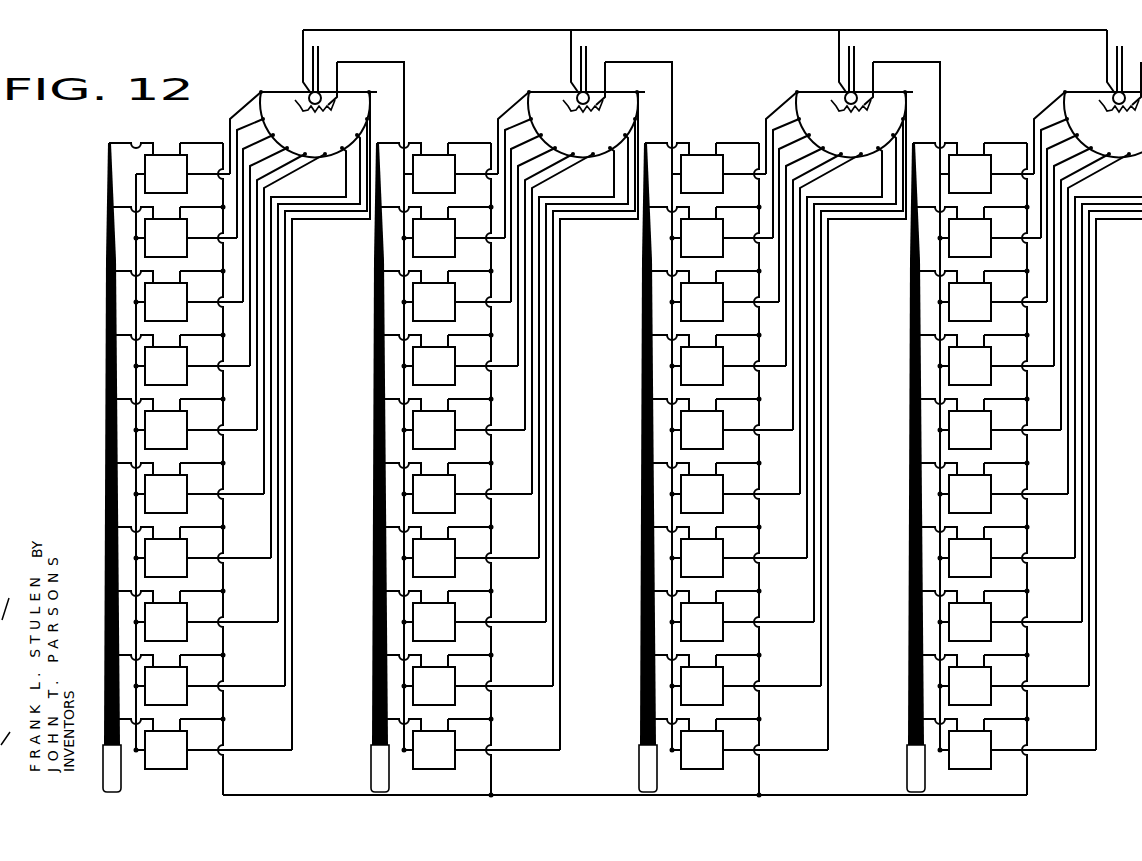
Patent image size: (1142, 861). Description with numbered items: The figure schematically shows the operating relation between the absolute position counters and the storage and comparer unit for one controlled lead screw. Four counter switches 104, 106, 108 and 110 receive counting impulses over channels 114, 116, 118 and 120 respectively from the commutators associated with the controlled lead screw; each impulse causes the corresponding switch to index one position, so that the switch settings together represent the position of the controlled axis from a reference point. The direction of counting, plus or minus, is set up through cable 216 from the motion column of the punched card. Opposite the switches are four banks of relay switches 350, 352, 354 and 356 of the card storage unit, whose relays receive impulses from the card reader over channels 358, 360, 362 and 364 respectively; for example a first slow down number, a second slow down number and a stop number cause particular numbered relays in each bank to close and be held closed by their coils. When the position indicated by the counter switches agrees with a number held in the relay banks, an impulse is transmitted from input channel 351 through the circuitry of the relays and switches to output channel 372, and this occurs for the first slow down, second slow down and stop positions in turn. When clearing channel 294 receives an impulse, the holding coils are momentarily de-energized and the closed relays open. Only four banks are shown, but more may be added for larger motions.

The counter switch 104 is at (339, 141).
The counter switch 106 is at (583, 93).
The counter switch 108 is at (851, 93).
The counter switch 110 is at (1098, 93).
The channel 114 is at (334, 45).
The channel 116 is at (589, 62).
The channel 118 is at (857, 62).
The channel 120 is at (1108, 53).
The cable 216 is at (729, 30).
The clearing channel 294 is at (620, 808).
The relay bank 350 is at (190, 797).
The relay bank 352 is at (511, 444).
The relay bank 354 is at (779, 444).
The relay bank 356 is at (1027, 444).
The input channel 351 is at (128, 800).
The channel 358 is at (107, 510).
The channel 360 is at (353, 467).
The channel 362 is at (622, 467).
The channel 364 is at (889, 467).
The output channel 372 is at (1097, 88).